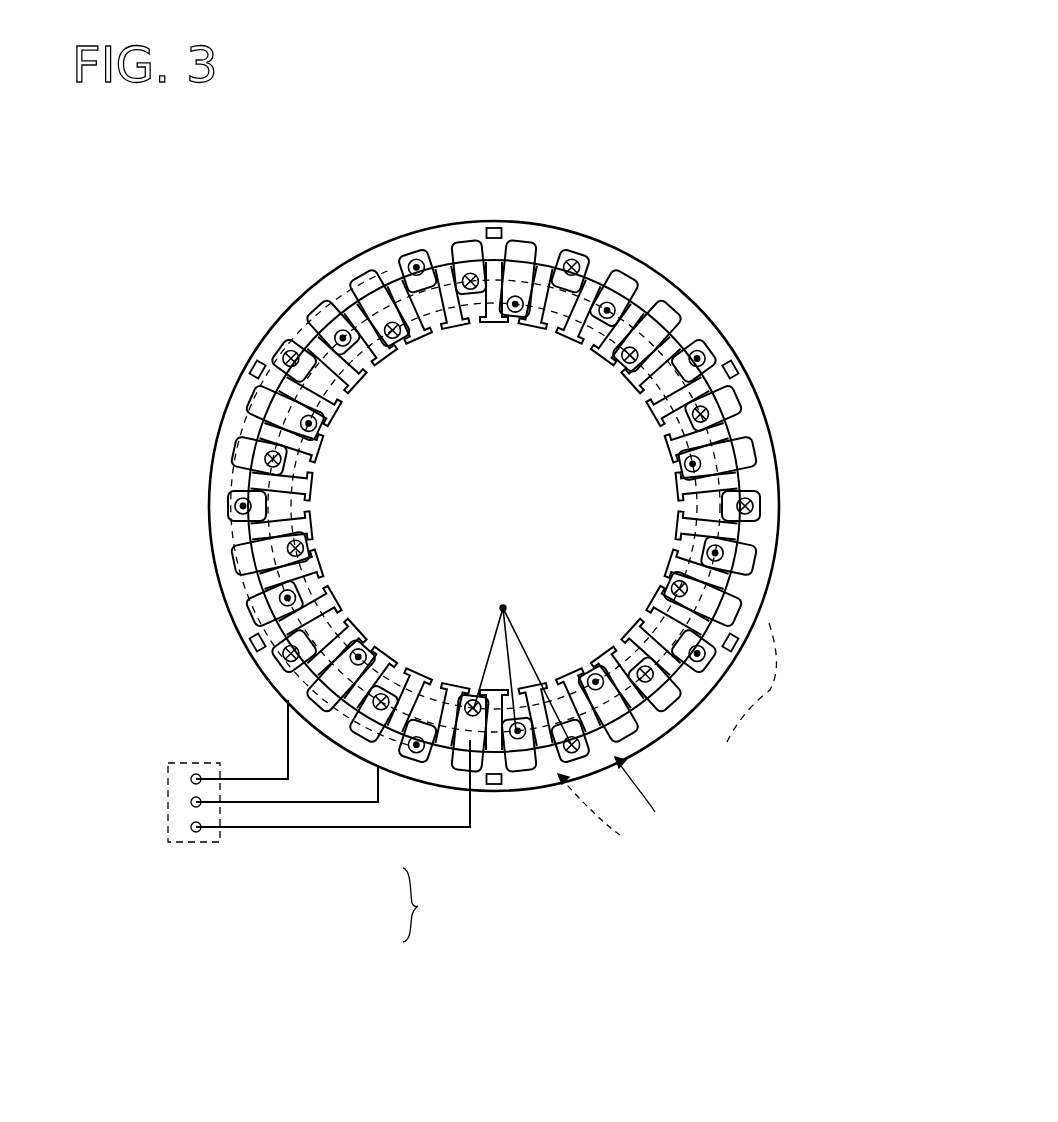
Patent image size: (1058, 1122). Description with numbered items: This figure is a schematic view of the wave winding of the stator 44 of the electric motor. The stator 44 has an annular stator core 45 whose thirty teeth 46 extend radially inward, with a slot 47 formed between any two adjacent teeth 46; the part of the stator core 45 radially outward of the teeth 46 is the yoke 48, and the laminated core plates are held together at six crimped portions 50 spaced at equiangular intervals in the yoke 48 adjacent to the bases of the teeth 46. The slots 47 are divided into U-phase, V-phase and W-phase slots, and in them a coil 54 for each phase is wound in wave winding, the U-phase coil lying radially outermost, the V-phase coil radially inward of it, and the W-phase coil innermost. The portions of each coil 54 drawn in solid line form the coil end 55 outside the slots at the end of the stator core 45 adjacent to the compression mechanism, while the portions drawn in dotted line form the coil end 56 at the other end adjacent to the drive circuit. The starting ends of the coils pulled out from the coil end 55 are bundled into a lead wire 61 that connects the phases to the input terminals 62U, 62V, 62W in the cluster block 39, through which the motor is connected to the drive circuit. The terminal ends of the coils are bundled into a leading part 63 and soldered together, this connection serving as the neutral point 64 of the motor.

The stator 44 is at (624, 220).
The stator core 45 is at (540, 221).
The teeth 46 is at (386, 343).
The slot 47 is at (425, 250).
The yoke 48 is at (757, 415).
The crimped portions 50 is at (497, 228).
The coil 54 is at (292, 330).
The coil end 55 is at (647, 791).
The coil end 56 is at (601, 811).
The lead wire 61 is at (423, 905).
The input terminal 62U is at (190, 779).
The input terminal 62V is at (190, 802).
The input terminal 62W is at (190, 827).
The leading part 63 is at (503, 608).
The neutral point 64 is at (506, 612).
The cluster block 39 is at (190, 845).